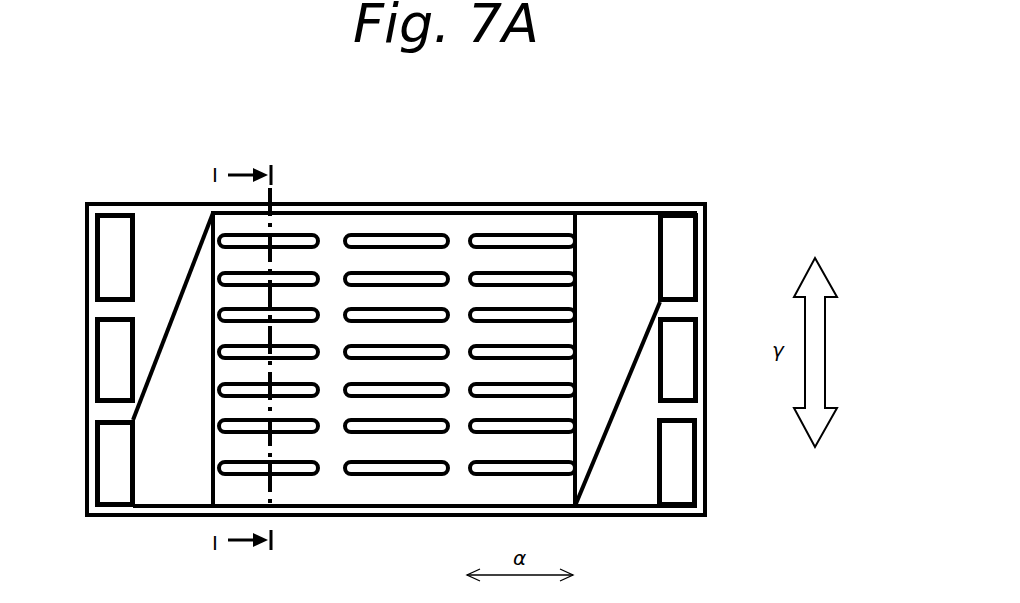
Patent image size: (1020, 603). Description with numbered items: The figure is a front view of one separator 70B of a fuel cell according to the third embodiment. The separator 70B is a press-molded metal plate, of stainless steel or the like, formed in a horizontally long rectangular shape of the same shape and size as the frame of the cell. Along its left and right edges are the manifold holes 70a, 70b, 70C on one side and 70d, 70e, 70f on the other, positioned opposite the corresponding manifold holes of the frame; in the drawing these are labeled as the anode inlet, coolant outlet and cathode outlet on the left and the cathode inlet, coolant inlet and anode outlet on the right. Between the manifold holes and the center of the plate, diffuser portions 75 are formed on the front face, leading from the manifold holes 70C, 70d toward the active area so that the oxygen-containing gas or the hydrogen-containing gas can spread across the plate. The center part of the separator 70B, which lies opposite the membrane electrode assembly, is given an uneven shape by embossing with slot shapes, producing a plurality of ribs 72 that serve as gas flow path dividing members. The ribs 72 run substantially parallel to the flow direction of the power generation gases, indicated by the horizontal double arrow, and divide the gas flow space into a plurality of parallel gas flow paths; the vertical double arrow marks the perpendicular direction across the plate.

The separator 70B is at (87, 189).
The manifold hole 70a is at (100, 250).
The manifold hole 70b is at (100, 350).
The manifold hole 70C is at (113, 490).
The manifold hole 70d is at (688, 230).
The manifold hole 70e is at (687, 340).
The manifold hole 70f is at (690, 478).
The ribs 72 is at (360, 237).
The diffuser portions 75 is at (173, 449).